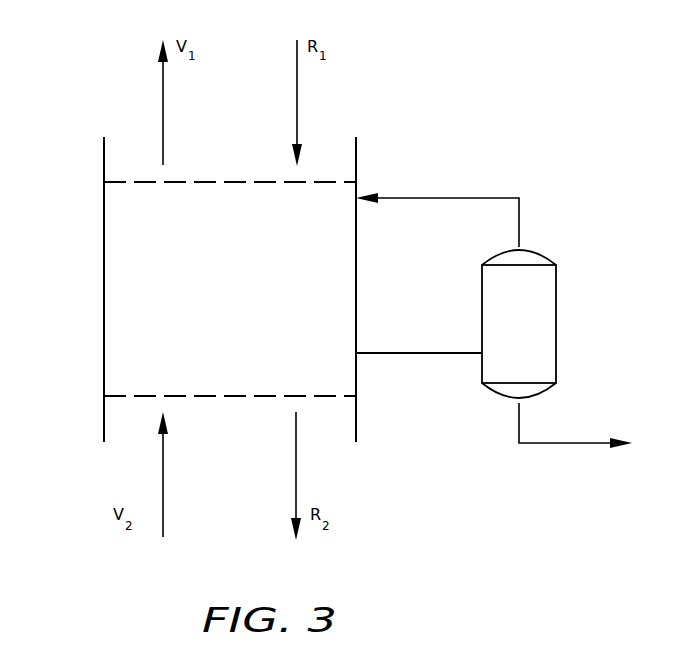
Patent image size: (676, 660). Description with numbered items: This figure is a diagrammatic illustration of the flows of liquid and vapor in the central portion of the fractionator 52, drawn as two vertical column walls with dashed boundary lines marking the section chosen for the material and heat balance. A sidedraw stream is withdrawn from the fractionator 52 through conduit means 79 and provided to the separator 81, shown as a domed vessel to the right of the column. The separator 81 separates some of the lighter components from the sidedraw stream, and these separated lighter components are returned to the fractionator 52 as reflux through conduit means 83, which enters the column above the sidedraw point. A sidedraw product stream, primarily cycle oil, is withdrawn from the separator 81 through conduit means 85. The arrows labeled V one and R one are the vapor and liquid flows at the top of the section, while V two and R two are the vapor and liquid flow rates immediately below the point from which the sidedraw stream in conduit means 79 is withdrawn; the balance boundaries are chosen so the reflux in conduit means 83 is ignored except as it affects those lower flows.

The fractionator 52 is at (103, 285).
The conduit means 79 is at (417, 352).
The separator 81 is at (556, 302).
The conduit means 83 is at (440, 197).
The conduit means 85 is at (573, 445).